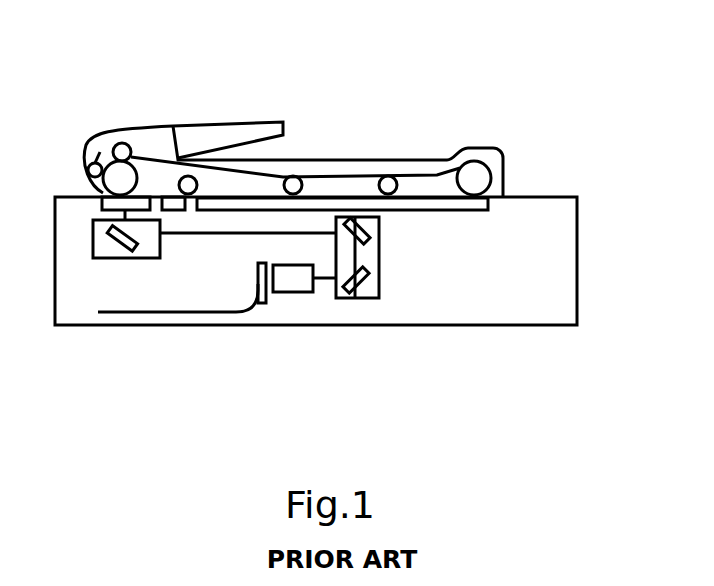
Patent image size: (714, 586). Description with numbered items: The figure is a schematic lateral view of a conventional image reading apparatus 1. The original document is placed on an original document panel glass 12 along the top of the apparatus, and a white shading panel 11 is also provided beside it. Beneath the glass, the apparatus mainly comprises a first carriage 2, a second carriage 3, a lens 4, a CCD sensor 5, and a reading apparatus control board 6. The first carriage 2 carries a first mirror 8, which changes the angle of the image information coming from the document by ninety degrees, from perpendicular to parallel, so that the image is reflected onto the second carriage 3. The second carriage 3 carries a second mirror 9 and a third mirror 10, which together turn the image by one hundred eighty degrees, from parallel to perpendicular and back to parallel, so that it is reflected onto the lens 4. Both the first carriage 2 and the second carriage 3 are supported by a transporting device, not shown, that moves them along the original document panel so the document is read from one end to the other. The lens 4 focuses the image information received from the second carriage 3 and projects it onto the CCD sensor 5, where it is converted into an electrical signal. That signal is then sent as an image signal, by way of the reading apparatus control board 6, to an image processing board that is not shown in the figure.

The image reading apparatus 1 is at (533, 69).
The first carriage 2 is at (145, 258).
The second carriage 3 is at (380, 262).
The lens 4 is at (300, 292).
The CCD sensor 5 is at (260, 303).
The reading apparatus control board 6 is at (213, 313).
The first mirror 8 is at (117, 240).
The second mirror 9 is at (363, 225).
The third mirror 10 is at (368, 298).
The white shading panel 11 is at (172, 203).
The original document panel glass 12 is at (450, 212).